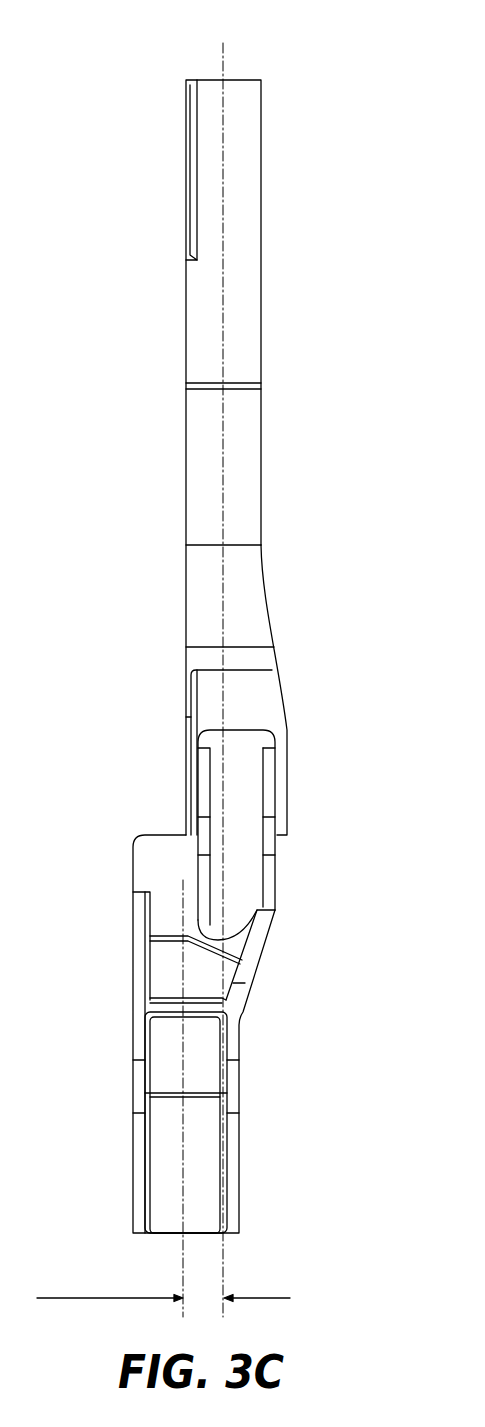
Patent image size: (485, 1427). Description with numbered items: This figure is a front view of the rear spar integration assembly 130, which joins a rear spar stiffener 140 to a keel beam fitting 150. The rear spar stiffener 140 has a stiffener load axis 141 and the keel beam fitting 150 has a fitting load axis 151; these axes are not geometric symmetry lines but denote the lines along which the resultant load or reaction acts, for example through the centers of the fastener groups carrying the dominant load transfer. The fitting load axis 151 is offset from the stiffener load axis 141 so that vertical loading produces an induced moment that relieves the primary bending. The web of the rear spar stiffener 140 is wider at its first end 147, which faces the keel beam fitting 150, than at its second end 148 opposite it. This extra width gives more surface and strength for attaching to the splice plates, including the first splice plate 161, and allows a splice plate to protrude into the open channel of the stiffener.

The rear spar integration assembly 130 is at (339, 72).
The rear spar stiffener 140 is at (262, 340).
The stiffener load axis 141 is at (222, 468).
The first end 147 is at (280, 835).
The second end 148 is at (242, 80).
The keel beam fitting 150 is at (230, 1153).
The fitting load axis 151 is at (182, 1218).
The first splice plate 161 is at (250, 882).